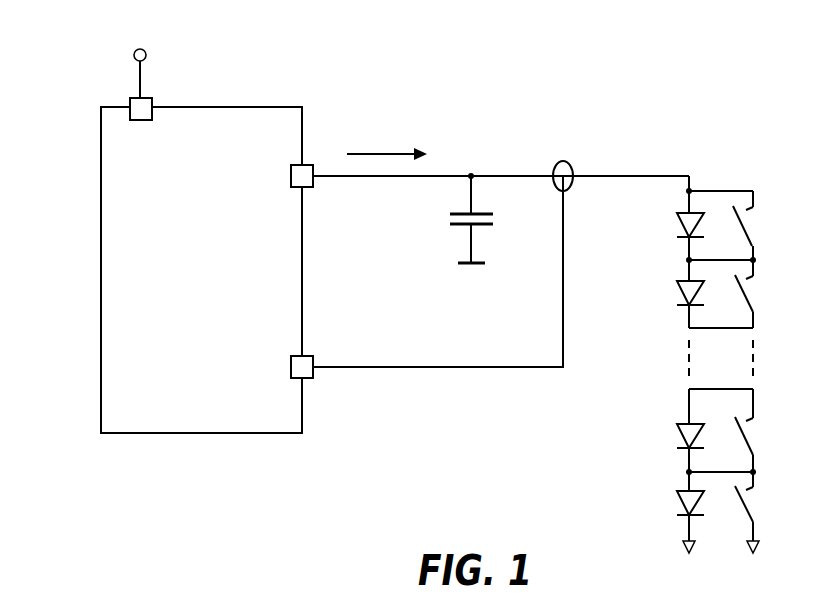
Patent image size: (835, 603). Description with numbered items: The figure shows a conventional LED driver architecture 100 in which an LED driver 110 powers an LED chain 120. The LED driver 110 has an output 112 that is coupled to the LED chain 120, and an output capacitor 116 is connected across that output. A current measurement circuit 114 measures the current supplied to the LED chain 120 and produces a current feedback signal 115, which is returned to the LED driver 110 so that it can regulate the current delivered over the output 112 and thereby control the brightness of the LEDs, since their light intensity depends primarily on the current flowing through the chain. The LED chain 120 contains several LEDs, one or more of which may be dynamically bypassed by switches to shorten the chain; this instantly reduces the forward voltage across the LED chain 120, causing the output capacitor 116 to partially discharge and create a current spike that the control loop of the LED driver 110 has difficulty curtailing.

The LED driver architecture 100 is at (102, 58).
The LED driver 110 is at (222, 107).
The output 112 is at (633, 176).
The current measurement circuit 114 is at (557, 160).
The current feedback signal 115 is at (433, 367).
The output capacitor 116 is at (450, 219).
The LED chain 120 is at (753, 162).